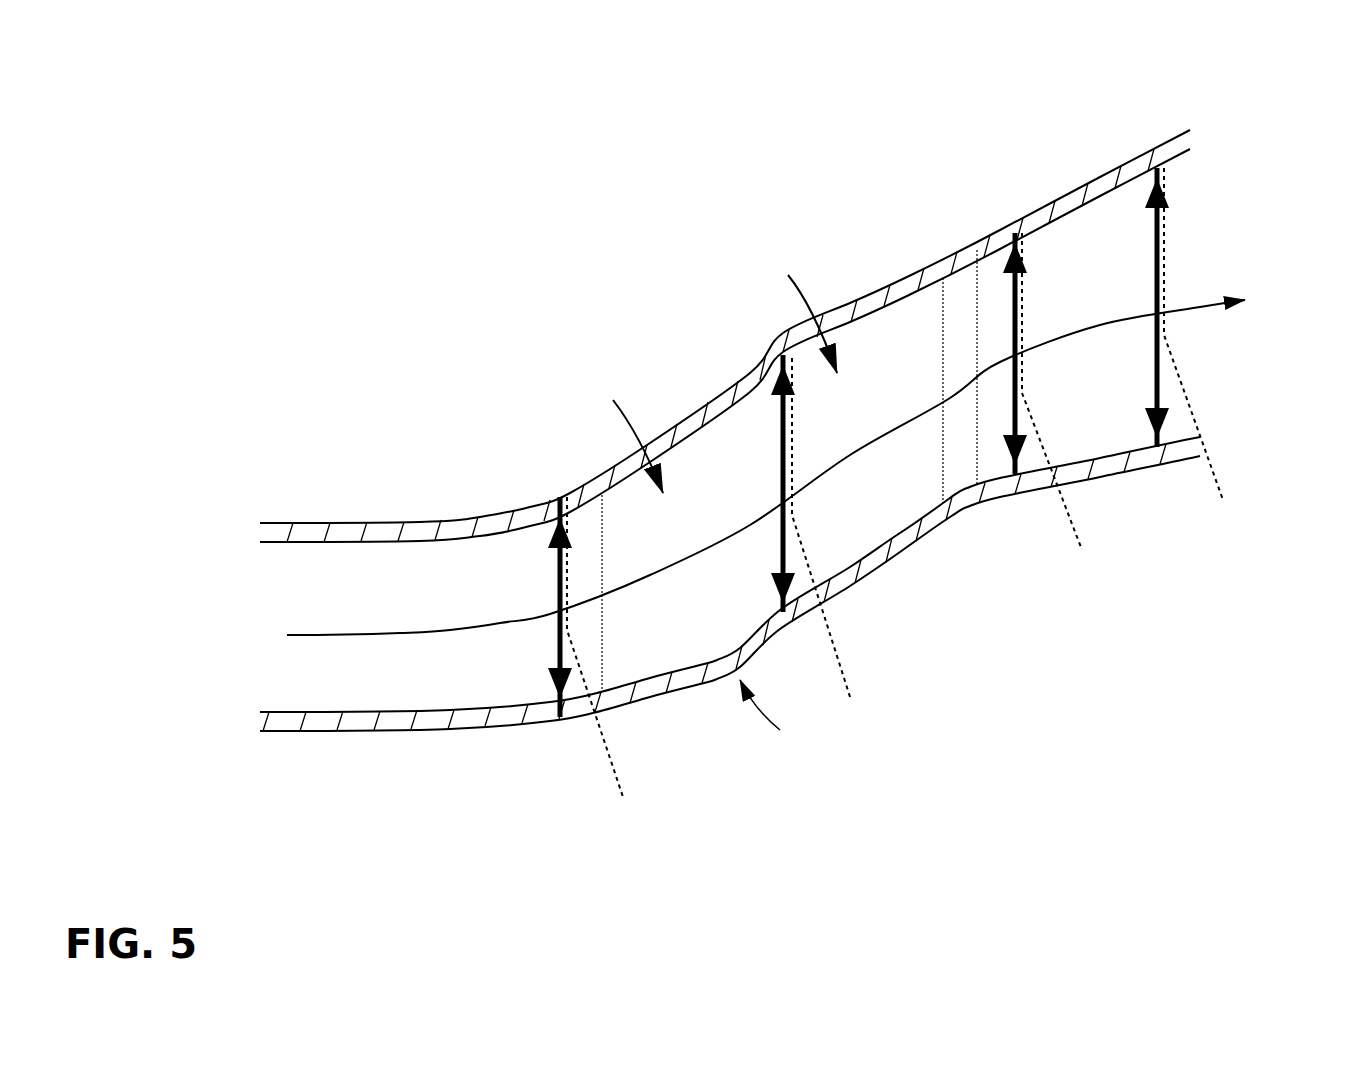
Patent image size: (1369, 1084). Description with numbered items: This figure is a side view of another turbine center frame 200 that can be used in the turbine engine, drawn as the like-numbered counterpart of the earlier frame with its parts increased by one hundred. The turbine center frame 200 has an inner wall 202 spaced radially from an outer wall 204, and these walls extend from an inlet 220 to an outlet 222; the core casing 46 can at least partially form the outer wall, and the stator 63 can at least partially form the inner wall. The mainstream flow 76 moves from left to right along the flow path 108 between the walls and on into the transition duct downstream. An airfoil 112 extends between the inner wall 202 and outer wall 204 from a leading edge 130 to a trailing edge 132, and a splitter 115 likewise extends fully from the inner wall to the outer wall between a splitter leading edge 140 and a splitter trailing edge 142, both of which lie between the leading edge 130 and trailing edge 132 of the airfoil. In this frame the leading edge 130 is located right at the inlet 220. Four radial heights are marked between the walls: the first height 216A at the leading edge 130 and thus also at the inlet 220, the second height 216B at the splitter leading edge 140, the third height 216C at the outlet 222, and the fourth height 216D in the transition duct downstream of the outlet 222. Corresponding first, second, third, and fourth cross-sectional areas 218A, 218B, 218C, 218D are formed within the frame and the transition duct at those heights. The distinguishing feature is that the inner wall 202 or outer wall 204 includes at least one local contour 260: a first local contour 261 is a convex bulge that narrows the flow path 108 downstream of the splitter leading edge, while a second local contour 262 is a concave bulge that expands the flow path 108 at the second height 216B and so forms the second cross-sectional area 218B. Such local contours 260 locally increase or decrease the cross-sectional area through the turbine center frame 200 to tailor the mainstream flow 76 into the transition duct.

The core casing 46 is at (338, 530).
The stator 63 is at (320, 718).
The mainstream flow 76 is at (810, 428).
The flow path 108 is at (1203, 303).
The turbine center frame 200 is at (733, 257).
The inner wall 202 is at (883, 553).
The outer wall 204 is at (907, 290).
The airfoil 112 is at (619, 433).
The splitter 115 is at (793, 316).
The leading edge 130 is at (602, 647).
The trailing edge 132 is at (978, 460).
The splitter leading edge 140 is at (780, 498).
The splitter trailing edge 142 is at (943, 380).
The first height 216A is at (558, 572).
The second height 216B is at (783, 443).
The third height 216C is at (1010, 283).
The fourth height 216D is at (1153, 217).
The first cross-sectional area 218A is at (624, 662).
The second cross-sectional area 218B is at (850, 544).
The third cross-sectional area 218C is at (1079, 407).
The fourth cross-sectional area 218D is at (1223, 351).
The inlet 220 is at (560, 518).
The outlet 222 is at (1013, 222).
The local contour 260 is at (781, 716).
The first local contour 261 is at (730, 657).
The second local contour 262 is at (780, 348).